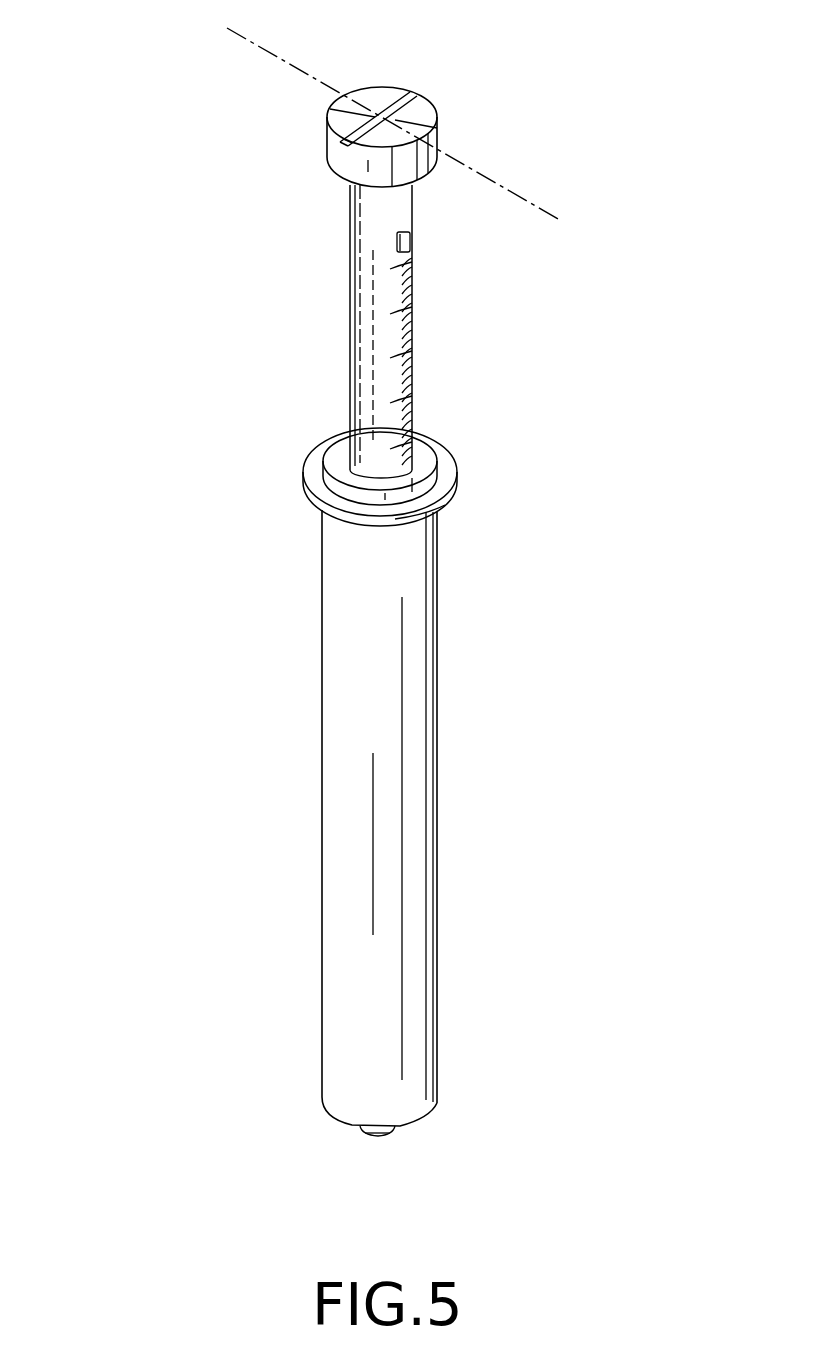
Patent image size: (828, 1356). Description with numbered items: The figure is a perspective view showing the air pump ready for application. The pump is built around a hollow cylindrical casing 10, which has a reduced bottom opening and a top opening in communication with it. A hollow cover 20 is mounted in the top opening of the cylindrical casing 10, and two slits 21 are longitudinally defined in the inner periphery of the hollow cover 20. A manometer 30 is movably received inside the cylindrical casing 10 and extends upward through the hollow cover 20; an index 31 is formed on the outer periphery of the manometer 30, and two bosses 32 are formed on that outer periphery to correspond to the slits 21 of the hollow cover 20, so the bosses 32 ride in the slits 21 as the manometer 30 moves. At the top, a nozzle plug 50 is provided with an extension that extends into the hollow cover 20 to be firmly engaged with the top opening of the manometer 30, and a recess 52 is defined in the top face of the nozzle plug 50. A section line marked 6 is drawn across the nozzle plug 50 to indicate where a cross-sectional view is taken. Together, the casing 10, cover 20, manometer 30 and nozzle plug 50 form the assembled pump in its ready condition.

The section line 6- 6 is at (232, 33).
The cylindrical casing 10 is at (418, 760).
The hollow cover 20 is at (423, 447).
The slits 21 is at (407, 472).
The manometer 30 is at (412, 203).
The index 31 is at (412, 352).
The bosses 32 is at (410, 248).
The nozzle plug 50 is at (430, 135).
The recess 52 is at (417, 98).